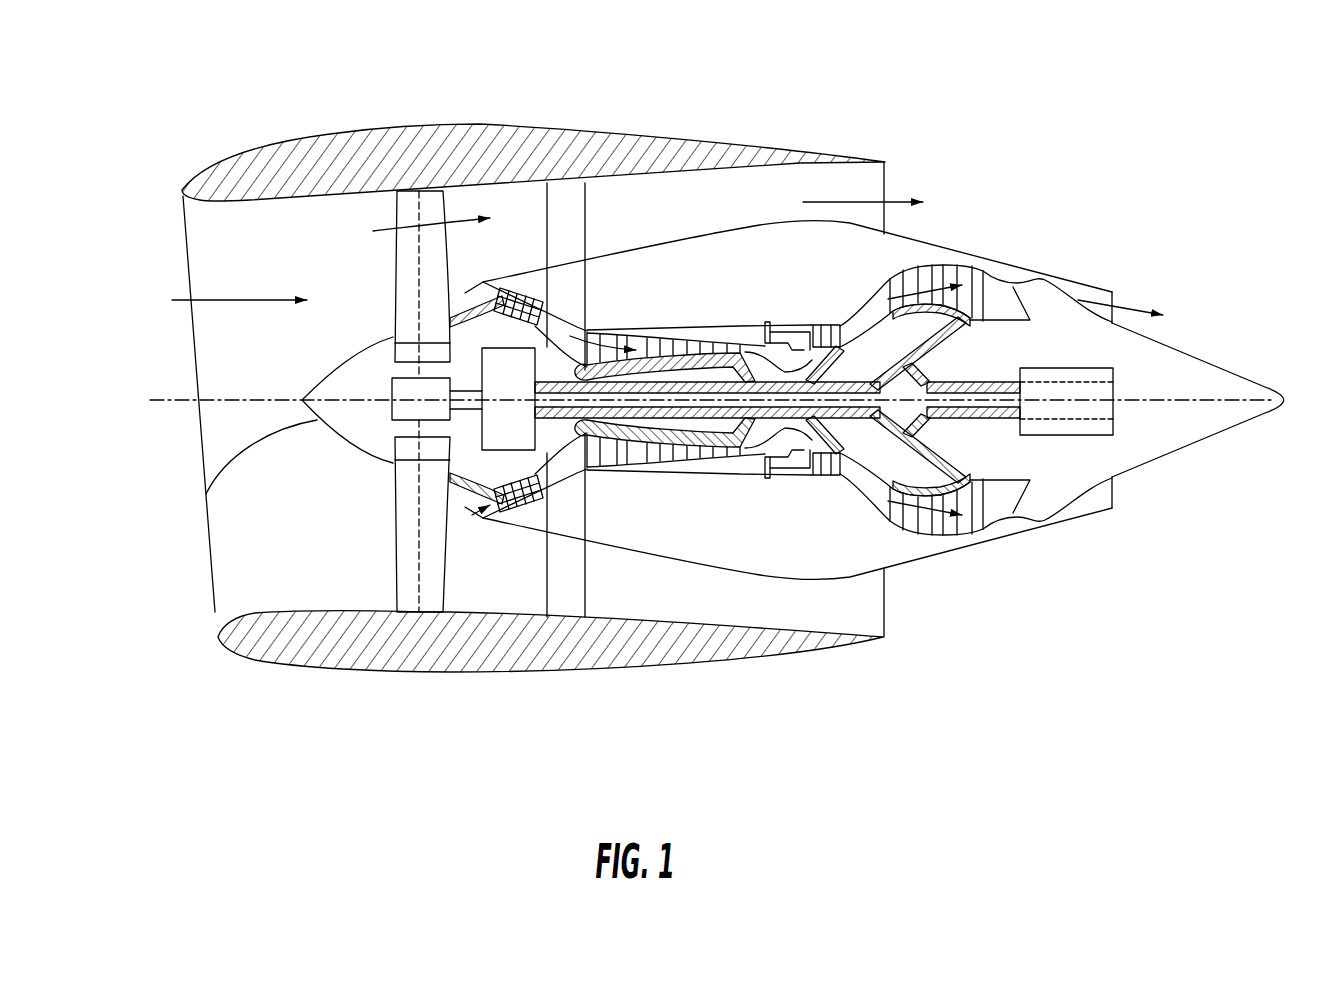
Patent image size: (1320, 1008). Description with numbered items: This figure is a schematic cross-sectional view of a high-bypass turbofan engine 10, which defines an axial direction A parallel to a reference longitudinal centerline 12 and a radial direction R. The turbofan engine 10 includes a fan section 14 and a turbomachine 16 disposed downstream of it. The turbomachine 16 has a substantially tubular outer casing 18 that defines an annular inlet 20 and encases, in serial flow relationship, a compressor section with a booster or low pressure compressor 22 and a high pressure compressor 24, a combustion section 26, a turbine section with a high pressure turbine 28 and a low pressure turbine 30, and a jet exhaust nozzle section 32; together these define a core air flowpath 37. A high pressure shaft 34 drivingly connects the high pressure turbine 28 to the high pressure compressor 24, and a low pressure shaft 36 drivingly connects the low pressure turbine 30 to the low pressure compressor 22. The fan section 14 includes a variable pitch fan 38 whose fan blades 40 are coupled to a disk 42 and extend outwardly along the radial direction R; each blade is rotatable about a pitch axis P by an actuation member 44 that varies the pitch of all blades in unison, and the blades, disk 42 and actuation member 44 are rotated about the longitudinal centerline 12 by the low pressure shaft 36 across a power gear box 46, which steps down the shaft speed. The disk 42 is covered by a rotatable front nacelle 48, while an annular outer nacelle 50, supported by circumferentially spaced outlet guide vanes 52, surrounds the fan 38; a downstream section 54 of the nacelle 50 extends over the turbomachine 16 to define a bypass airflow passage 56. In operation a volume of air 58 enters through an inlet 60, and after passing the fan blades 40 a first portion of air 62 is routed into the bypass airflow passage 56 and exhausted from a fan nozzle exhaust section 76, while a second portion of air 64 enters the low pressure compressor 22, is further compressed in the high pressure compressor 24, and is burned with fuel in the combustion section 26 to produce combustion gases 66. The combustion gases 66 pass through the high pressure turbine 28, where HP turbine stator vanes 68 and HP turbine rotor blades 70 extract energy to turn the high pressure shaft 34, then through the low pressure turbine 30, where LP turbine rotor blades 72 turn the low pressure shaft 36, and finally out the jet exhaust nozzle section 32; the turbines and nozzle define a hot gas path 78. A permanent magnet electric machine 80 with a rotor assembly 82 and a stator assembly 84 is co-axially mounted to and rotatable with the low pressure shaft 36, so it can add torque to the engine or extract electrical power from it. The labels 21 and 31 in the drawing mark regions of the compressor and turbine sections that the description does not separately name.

The turbofan engine 10 is at (1030, 142).
The longitudinal centerline 12 is at (1226, 397).
The fan section 14 is at (437, 97).
The turbomachine 16 is at (752, 293).
The outer casing 18 is at (743, 566).
The annular inlet 20 is at (483, 517).
The compressor section 21 is at (612, 305).
The low pressure compressor 22 is at (550, 474).
The high pressure compressor 24 is at (614, 455).
The combustion section 26 is at (783, 472).
The high pressure turbine 28 is at (905, 466).
The low pressure turbine 30 is at (970, 530).
The turbine section 31 is at (862, 295).
The jet exhaust nozzle section 32 is at (1032, 510).
The high pressure shaft 34 is at (832, 367).
The low pressure shaft 36 is at (912, 362).
The core air flowpath 37 is at (578, 485).
The variable pitch fan 38 is at (360, 452).
The fan blades 40 is at (392, 551).
The disk 42 is at (413, 353).
The actuation member 44 is at (392, 382).
The power gear box 46 is at (525, 373).
The rotatable front nacelle 48 is at (206, 494).
The outer nacelle 50 is at (440, 675).
The outlet guide vanes 52 is at (586, 209).
The downstream section of the nacelle 54 is at (811, 150).
The bypass airflow passage 56 is at (711, 226).
The volume of air 58 is at (235, 300).
The inlet 60 is at (217, 615).
The first portion of air 62 is at (808, 202).
The second portion of air 64 is at (483, 281).
The combustion gases 66 is at (930, 268).
The HP turbine stator vanes 68 is at (803, 462).
The HP turbine rotor blades 70 is at (838, 453).
The LP turbine rotor blades 72 is at (870, 503).
The fan nozzle exhaust section 76 is at (875, 188).
The hot gas path 78 is at (874, 300).
The permanent magnet electric machine 80 is at (1110, 454).
The rotor assembly 82 is at (1110, 393).
The stator assembly 84 is at (1063, 380).
The pitch axis P is at (420, 207).
The axial direction A is at (782, 753).
The radial direction R is at (55, 258).